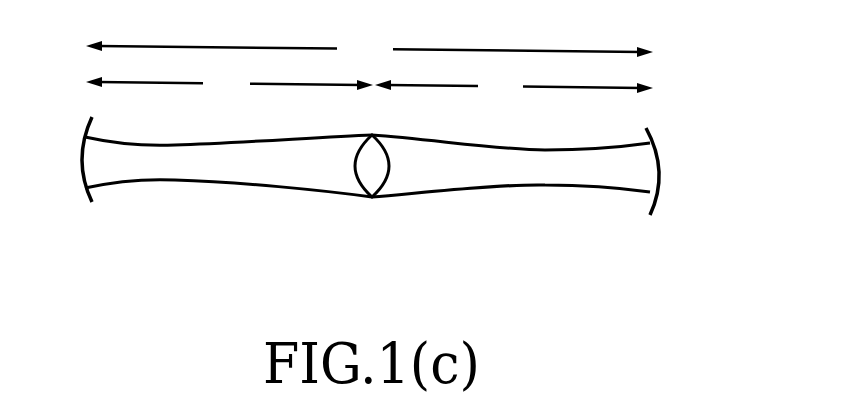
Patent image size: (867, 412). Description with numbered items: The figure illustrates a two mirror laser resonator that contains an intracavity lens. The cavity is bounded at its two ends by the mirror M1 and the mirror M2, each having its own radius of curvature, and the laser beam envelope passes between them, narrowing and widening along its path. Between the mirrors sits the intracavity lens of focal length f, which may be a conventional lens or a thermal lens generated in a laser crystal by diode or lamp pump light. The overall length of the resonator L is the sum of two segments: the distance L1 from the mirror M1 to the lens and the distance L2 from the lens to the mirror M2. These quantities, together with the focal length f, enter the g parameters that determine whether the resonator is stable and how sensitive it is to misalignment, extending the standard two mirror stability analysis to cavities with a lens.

The mirror M1 is at (84, 205).
The mirror M2 is at (646, 213).
The focal length of the intracavity lens f is at (372, 184).
The length of the resonator L is at (369, 51).
The distance from mirror M1 to the intracavity lens L1 is at (229, 91).
The distance from the intracavity lens to mirror M2 L2 is at (514, 91).